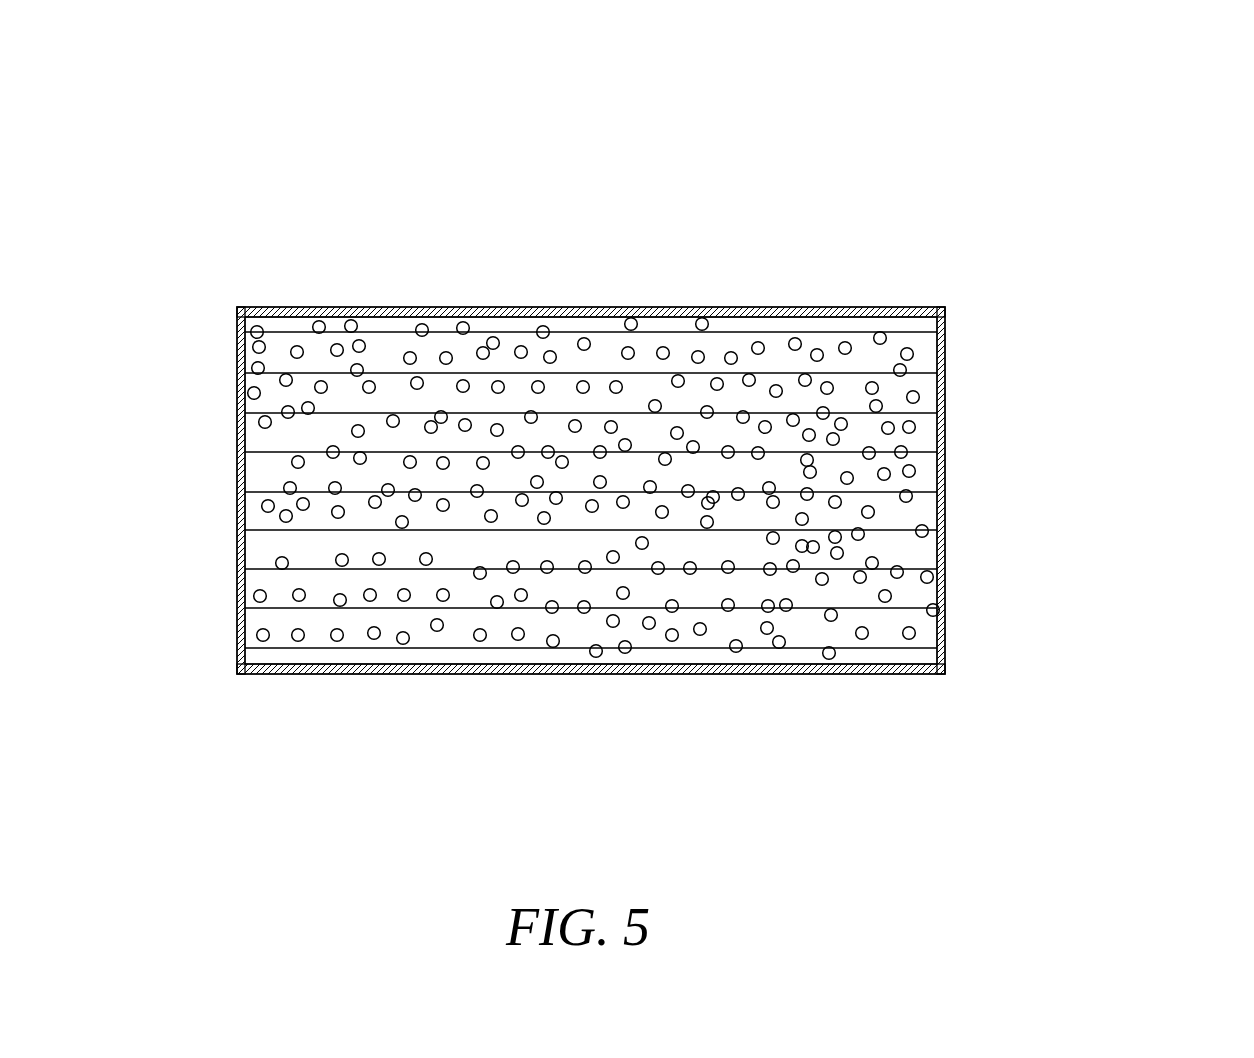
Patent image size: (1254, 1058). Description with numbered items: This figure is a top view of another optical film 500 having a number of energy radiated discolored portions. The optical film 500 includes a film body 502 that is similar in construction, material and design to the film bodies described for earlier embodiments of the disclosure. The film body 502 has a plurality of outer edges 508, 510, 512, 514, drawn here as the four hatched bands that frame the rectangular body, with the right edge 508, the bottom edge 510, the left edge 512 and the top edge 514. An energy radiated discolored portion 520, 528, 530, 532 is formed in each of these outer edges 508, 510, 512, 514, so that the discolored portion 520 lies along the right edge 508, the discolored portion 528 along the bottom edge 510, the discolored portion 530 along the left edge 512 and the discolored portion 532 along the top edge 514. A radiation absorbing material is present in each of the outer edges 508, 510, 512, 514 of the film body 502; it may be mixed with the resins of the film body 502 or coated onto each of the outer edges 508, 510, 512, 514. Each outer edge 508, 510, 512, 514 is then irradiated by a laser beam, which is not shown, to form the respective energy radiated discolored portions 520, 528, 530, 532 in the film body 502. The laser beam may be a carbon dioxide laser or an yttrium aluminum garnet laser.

The optical film 500 is at (1130, 96).
The film body 502 is at (983, 322).
The outer edge 508 is at (959, 508).
The outer edge 510 is at (606, 687).
The outer edge 512 is at (225, 506).
The outer edge 514 is at (735, 296).
The energy radiated discolored portion 520 is at (946, 423).
The energy radiated discolored portion 528 is at (758, 675).
The energy radiated discolored portion 530 is at (237, 431).
The energy radiated discolored portion 532 is at (447, 307).